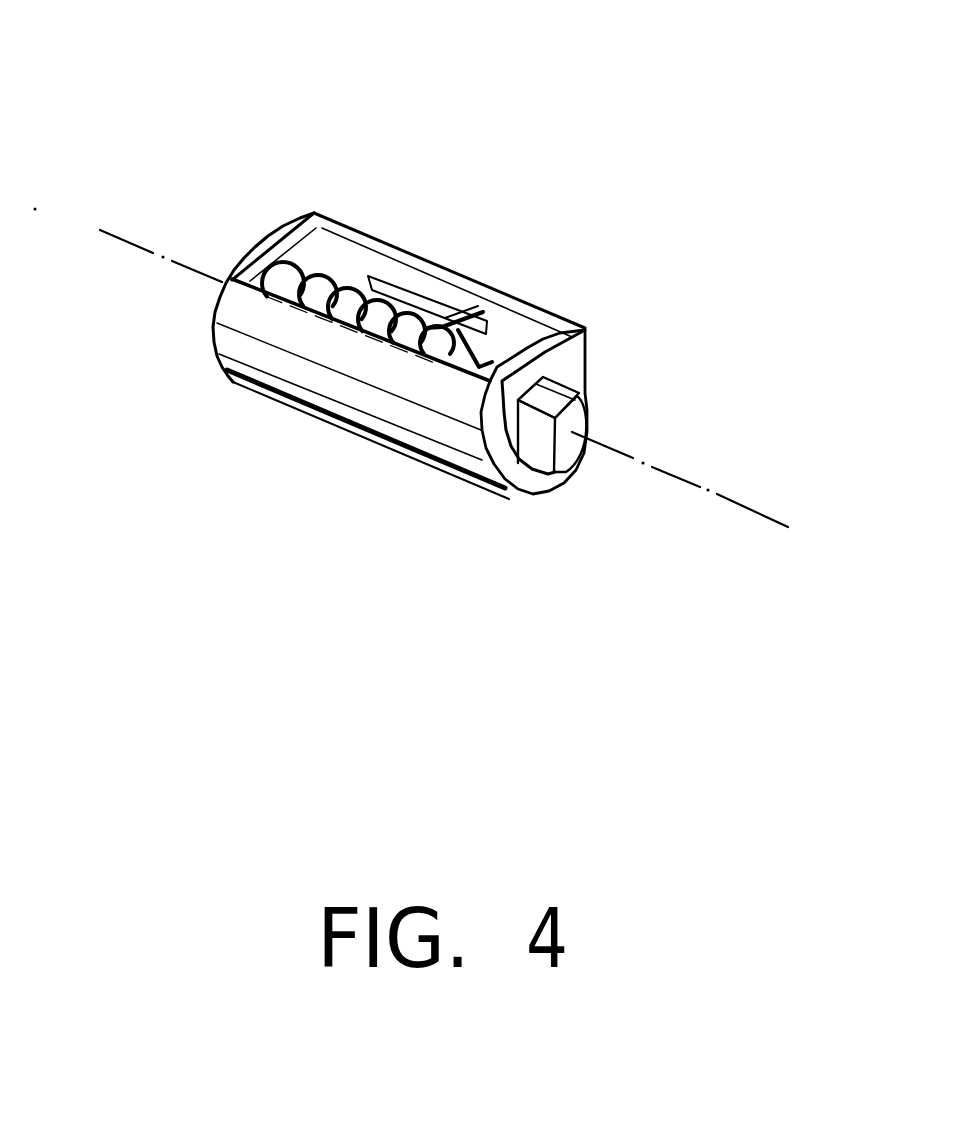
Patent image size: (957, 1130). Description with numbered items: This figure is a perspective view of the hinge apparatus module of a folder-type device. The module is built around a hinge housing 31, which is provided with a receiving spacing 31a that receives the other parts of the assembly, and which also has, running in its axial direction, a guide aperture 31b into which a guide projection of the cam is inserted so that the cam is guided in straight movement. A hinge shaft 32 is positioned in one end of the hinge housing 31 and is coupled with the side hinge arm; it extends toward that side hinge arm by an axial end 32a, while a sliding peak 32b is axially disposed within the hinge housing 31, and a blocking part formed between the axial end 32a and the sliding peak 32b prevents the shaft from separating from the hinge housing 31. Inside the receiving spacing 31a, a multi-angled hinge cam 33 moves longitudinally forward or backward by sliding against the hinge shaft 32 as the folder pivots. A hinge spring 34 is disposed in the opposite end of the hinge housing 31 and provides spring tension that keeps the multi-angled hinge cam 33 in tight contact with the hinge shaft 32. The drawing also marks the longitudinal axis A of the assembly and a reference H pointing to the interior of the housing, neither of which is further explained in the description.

The hinge housing 31 is at (465, 355).
The receiving spacing 31a is at (305, 248).
The guide aperture 31b is at (388, 292).
The hinge shaft 32 is at (613, 410).
The axial end 32a is at (568, 455).
The sliding peak 32b is at (480, 336).
The multi-angled hinge cam 33 is at (443, 278).
The hinge spring 34 is at (332, 268).
The hole H is at (500, 262).
The axis A is at (681, 477).